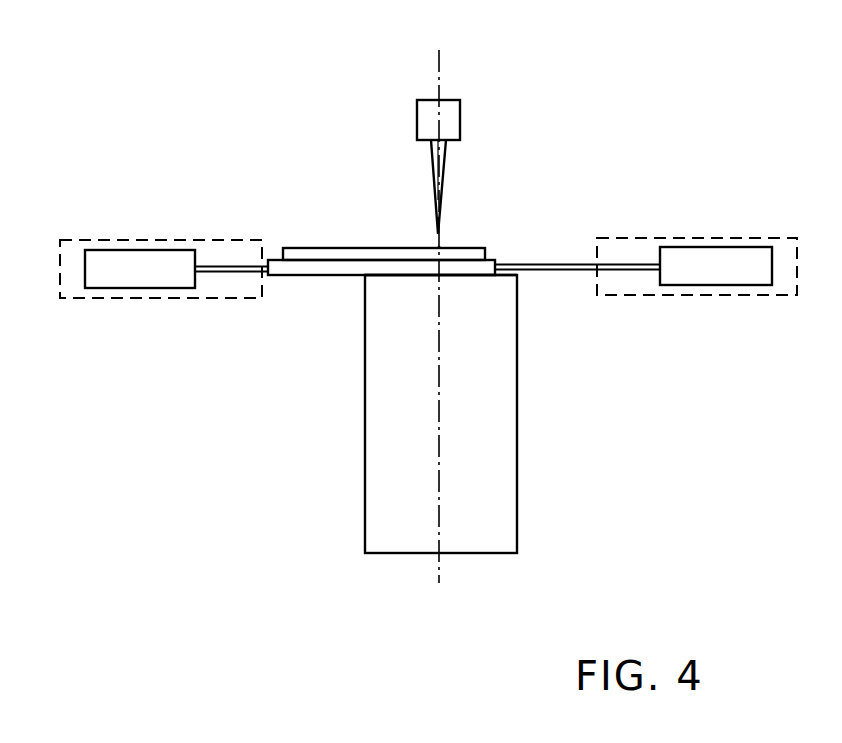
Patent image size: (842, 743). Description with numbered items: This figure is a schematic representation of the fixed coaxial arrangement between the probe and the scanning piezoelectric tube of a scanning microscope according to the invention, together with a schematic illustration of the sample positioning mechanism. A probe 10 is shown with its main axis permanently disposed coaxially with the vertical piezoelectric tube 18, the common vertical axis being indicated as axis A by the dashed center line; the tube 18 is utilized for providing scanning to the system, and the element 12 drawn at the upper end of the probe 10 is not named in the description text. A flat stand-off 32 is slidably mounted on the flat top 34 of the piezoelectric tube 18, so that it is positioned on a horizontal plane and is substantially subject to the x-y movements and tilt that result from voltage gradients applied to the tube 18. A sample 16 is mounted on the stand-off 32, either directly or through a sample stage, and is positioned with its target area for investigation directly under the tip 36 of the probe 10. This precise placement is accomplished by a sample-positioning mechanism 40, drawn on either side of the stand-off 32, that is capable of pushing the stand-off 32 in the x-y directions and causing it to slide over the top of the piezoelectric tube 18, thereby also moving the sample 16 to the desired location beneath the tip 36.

The axis A is at (439, 452).
The probe 10 is at (440, 167).
The laser source 12 is at (455, 125).
The sample 16 is at (488, 250).
The piezoelectric tube 18 is at (495, 478).
The stand-off 32 is at (320, 270).
The flat top 34 is at (413, 277).
The tip 36 is at (440, 241).
The sample-positioning mechanism 40 is at (110, 240).